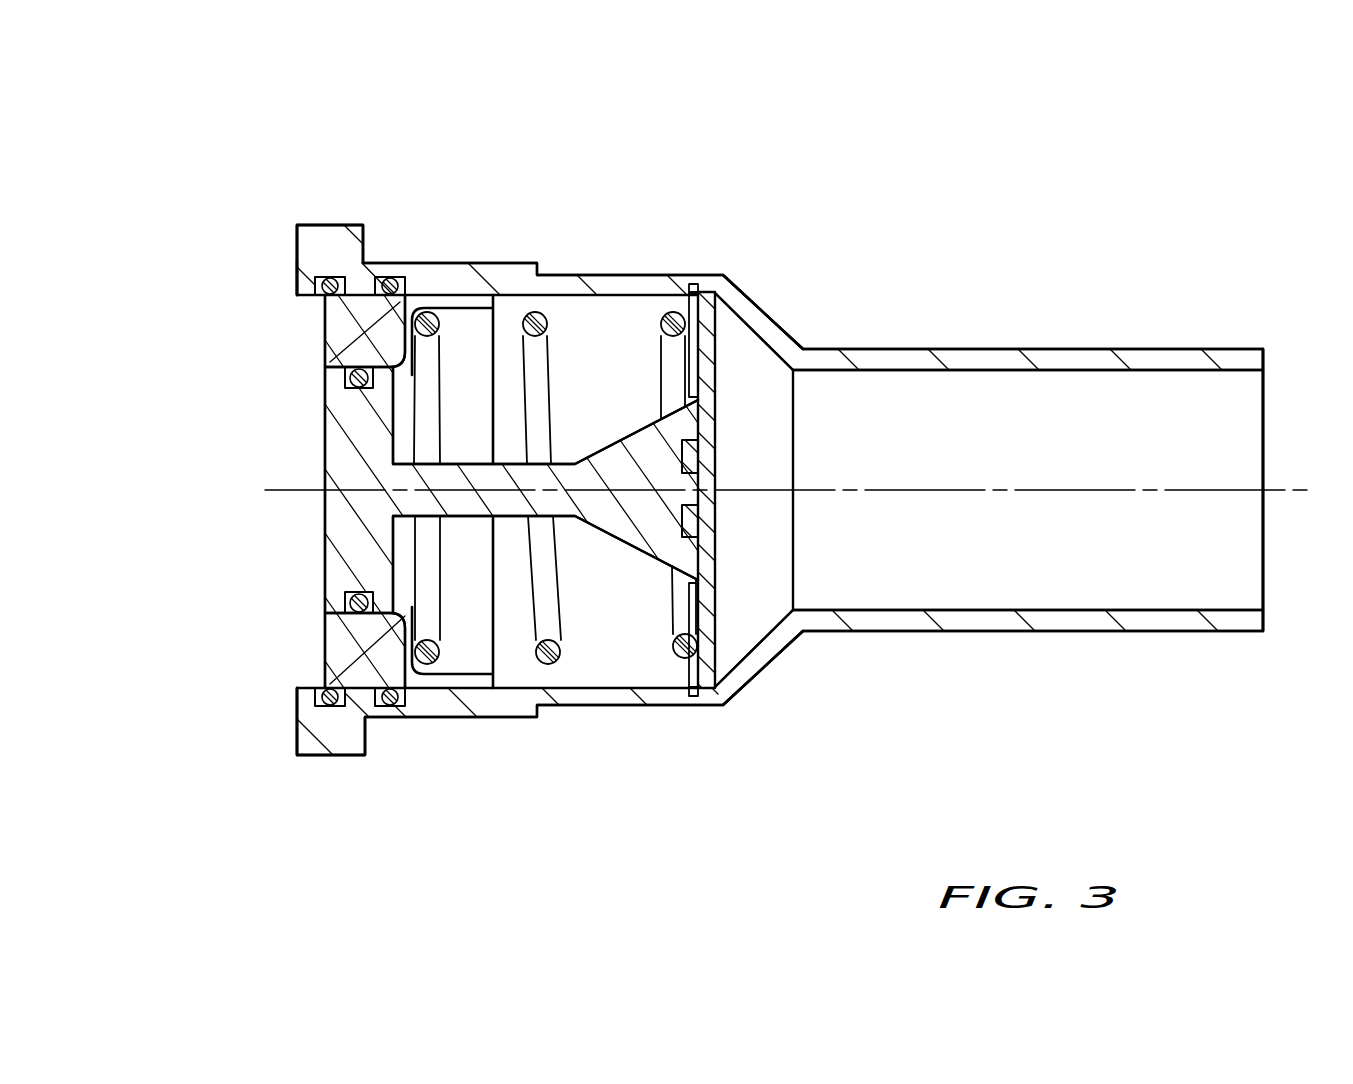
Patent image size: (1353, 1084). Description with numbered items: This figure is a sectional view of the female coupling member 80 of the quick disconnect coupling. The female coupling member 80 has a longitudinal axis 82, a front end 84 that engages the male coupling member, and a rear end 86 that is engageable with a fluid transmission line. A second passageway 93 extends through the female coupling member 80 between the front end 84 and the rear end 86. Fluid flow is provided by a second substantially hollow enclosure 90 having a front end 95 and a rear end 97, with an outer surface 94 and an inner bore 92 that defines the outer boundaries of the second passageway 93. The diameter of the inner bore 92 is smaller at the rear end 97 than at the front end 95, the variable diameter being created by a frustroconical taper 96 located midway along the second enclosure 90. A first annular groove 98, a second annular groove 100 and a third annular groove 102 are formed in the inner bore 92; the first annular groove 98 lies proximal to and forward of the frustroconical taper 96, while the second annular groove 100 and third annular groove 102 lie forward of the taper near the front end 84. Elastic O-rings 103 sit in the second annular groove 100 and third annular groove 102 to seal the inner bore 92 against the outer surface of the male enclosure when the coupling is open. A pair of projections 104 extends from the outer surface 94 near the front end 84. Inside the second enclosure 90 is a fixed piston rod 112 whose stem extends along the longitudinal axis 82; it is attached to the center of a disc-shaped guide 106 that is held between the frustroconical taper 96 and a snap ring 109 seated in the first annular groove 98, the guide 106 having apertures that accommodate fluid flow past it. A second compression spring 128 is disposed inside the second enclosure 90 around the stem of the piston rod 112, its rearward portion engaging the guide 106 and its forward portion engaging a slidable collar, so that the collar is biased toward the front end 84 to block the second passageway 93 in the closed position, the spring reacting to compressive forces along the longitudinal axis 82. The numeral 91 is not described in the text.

The female coupling member 80 is at (196, 178).
The longitudinal axis 82 is at (912, 492).
The front end 84 is at (292, 380).
The rear end 86 is at (1275, 452).
The second substantially hollow enclosure 90 is at (946, 346).
The flange face 91 is at (297, 245).
The inner bore 92 is at (1143, 372).
The second passageway 93 is at (889, 417).
The outer surface 94 is at (1070, 349).
The front end 95 is at (292, 275).
The frustroconical taper 96 is at (764, 342).
The rear end 97 is at (1275, 346).
The first annular groove 98 is at (712, 290).
The second annular groove 100 is at (417, 265).
The third annular groove 102 is at (358, 270).
The elastic O-rings 103 is at (392, 296).
The pair of projections 104 is at (320, 226).
The guide 106 is at (735, 300).
The snap ring 109 is at (693, 290).
The fixed piston rod 112 is at (325, 517).
The second compression spring 128 is at (536, 312).